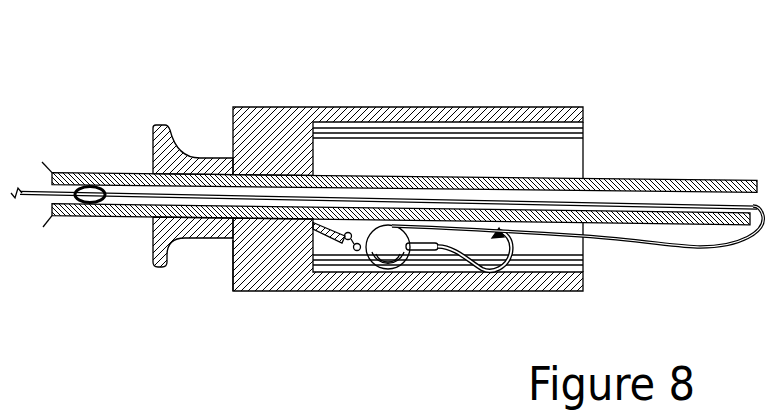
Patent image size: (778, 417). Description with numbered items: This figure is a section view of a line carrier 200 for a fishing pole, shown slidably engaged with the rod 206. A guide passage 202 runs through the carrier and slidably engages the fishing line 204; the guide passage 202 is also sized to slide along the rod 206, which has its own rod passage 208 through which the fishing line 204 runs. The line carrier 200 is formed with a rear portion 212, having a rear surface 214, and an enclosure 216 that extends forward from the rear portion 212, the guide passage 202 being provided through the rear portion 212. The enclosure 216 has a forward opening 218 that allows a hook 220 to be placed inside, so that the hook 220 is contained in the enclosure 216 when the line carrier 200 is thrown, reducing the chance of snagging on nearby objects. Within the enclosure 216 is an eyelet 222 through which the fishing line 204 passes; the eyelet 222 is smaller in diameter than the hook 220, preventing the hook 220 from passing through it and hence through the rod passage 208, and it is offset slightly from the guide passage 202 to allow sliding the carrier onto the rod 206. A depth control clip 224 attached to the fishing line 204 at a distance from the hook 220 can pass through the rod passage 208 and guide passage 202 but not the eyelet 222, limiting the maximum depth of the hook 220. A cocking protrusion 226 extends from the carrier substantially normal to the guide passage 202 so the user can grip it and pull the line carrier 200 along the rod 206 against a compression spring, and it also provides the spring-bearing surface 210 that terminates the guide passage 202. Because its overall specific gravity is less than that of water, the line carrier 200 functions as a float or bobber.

The line carrier 200 is at (420, 72).
The guide passage 202 is at (195, 174).
The fishing line 204 is at (667, 247).
The rod 206 is at (82, 219).
The rod passage 208 is at (132, 190).
The spring-bearing surface 210 is at (157, 240).
The rear portion 212 is at (264, 103).
The rear surface 214 is at (232, 277).
The enclosure 216 is at (472, 138).
The forward opening 218 is at (568, 152).
The hook 220 is at (392, 268).
The eyelet 222 is at (346, 232).
The depth control clip 224 is at (88, 187).
The cocking protrusion 226 is at (180, 290).